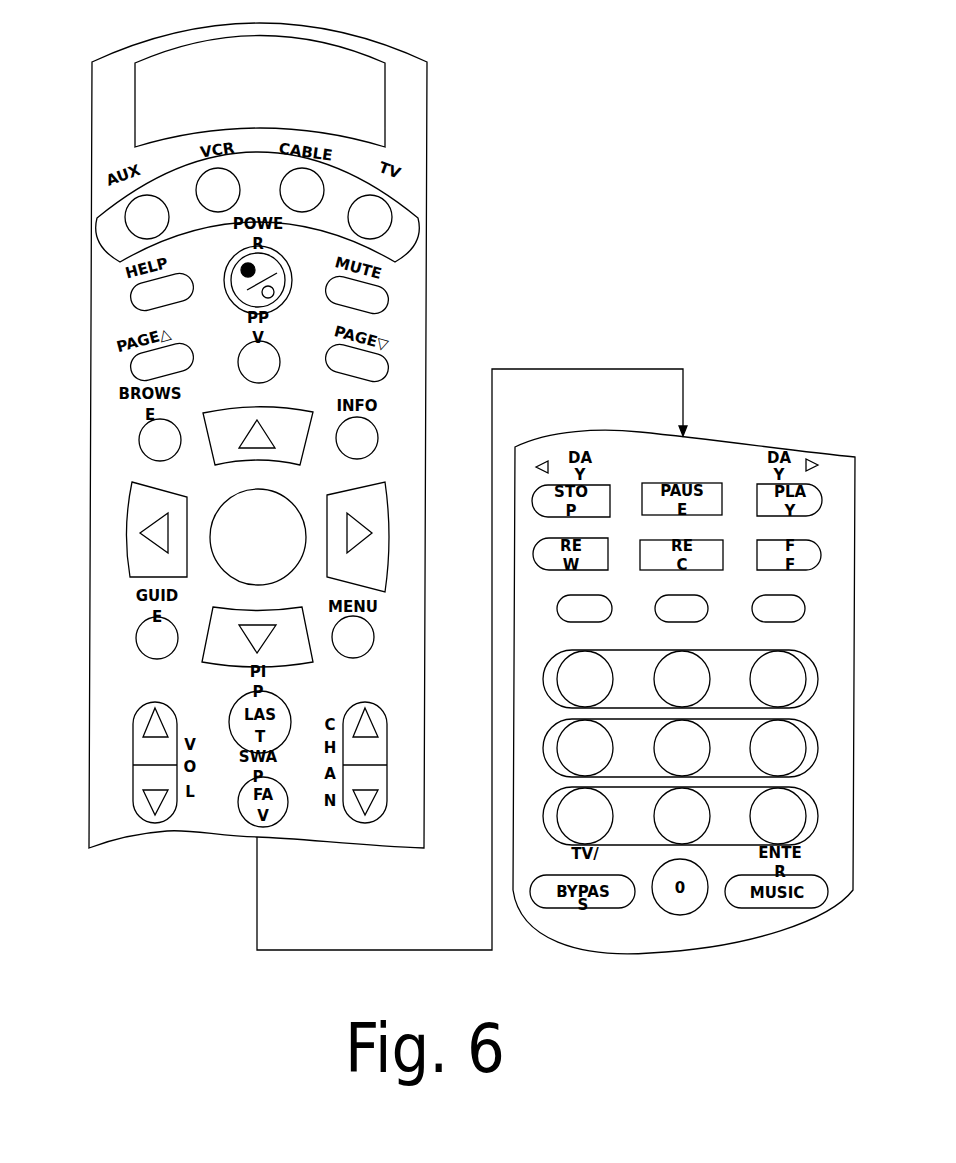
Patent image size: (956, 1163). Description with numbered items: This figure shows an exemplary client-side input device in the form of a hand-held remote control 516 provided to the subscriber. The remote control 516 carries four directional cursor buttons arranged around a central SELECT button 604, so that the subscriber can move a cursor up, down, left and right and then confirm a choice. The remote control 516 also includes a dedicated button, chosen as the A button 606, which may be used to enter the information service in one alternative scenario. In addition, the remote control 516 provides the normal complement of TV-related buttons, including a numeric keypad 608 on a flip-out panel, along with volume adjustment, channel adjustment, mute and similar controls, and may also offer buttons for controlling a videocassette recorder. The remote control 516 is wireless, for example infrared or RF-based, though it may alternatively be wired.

The hand-held remote control 516 is at (118, 50).
The SELECT button 604 is at (280, 507).
The A button 606 is at (570, 610).
The numeric keypad 608 is at (548, 677).